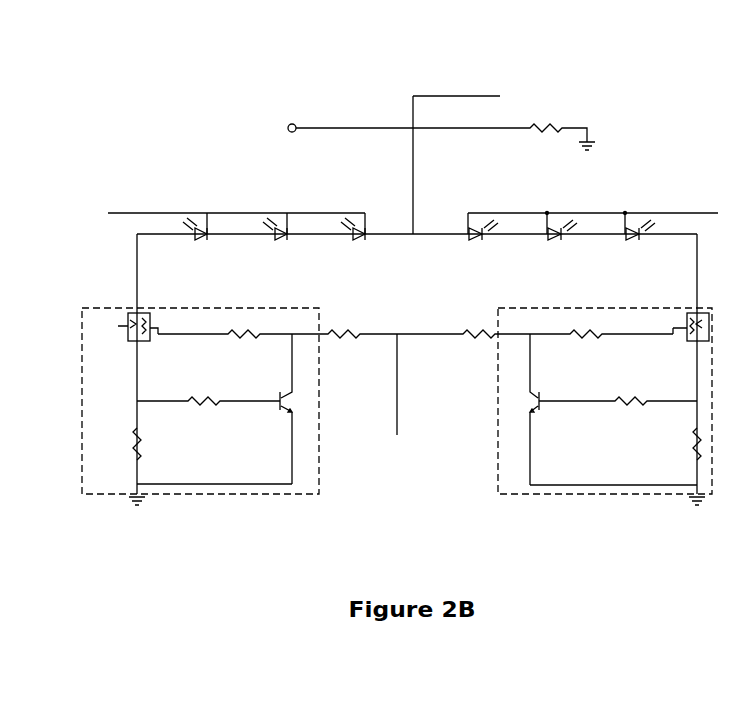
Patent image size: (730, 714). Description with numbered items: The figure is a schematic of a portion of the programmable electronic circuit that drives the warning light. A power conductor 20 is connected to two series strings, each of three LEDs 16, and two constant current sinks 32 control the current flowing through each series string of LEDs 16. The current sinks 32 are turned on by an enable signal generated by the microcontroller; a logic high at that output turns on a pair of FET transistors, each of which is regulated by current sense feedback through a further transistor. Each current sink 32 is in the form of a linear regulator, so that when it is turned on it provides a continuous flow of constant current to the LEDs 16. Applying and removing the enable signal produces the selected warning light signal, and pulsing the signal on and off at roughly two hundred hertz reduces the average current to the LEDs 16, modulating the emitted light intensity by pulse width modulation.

The power conductor 20 is at (487, 96).
The LEDs 16 is at (205, 240).
The constant current sinks 32 is at (242, 494).